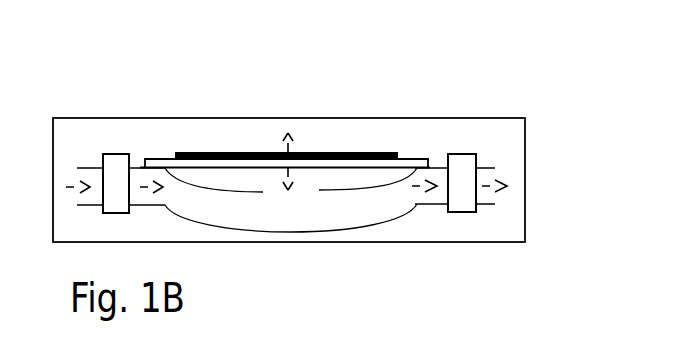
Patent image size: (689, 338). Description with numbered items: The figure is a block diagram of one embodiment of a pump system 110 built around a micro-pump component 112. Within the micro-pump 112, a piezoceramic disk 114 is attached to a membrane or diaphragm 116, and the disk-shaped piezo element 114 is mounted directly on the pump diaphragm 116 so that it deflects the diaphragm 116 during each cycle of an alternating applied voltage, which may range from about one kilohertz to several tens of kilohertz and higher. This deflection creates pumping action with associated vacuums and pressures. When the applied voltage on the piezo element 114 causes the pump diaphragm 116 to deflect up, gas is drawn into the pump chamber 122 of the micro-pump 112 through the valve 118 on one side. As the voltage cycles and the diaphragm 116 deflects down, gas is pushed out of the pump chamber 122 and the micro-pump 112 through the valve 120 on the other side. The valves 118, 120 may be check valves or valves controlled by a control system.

The pump system 110 is at (489, 44).
The micro-pump component 112 is at (397, 118).
The piezoceramic disk 114 is at (250, 153).
The membrane or diaphragm 116 is at (167, 159).
The valve 118 is at (118, 154).
The valve 120 is at (465, 212).
The pump chamber 122 is at (328, 212).